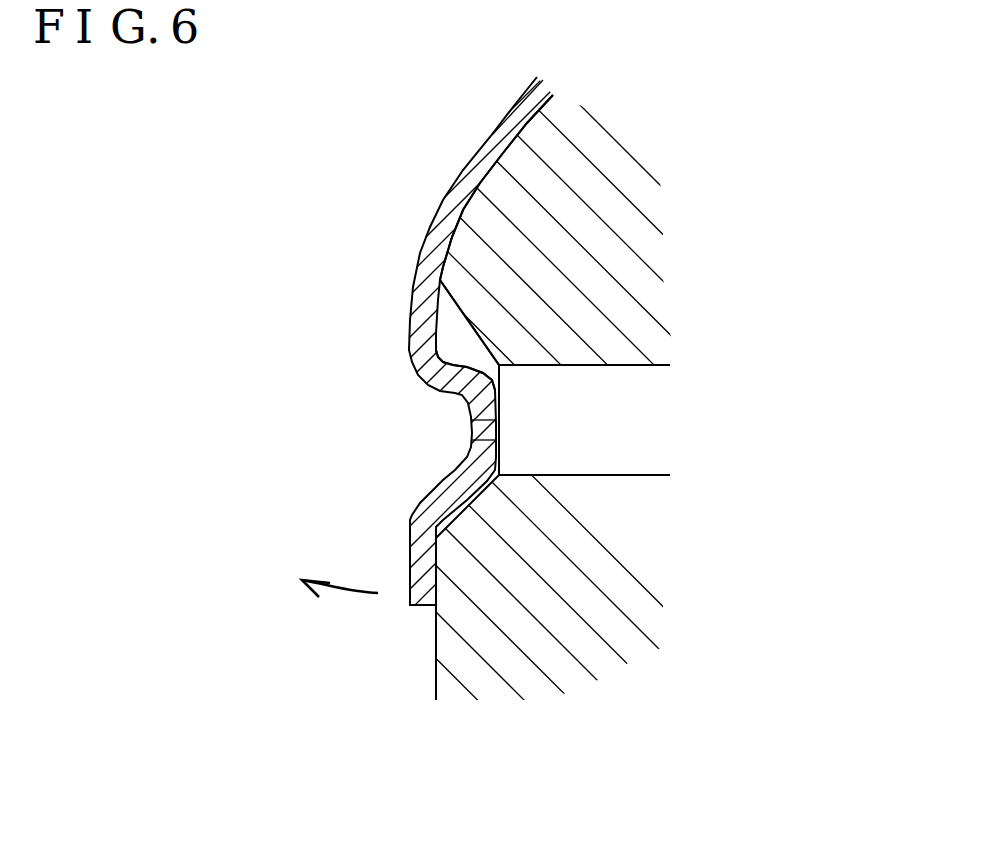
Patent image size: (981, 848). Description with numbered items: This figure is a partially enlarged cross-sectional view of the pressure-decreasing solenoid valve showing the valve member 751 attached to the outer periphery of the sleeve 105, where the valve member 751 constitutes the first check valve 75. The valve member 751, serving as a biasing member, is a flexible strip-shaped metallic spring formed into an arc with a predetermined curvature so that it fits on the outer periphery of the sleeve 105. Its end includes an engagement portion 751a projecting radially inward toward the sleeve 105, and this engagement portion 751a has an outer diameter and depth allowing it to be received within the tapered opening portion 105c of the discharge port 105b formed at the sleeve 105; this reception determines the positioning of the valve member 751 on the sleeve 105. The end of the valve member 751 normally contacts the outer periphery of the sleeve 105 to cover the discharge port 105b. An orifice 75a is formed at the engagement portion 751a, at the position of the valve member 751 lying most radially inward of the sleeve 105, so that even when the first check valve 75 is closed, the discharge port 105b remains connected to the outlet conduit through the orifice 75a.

The sleeve 105 is at (653, 250).
The discharge port 105b is at (617, 473).
The tapered opening portion 105c is at (472, 315).
The valve member 751 is at (433, 222).
The engagement portion 751a is at (465, 366).
The orifice 75a is at (471, 435).
The first check valve 75 is at (272, 628).